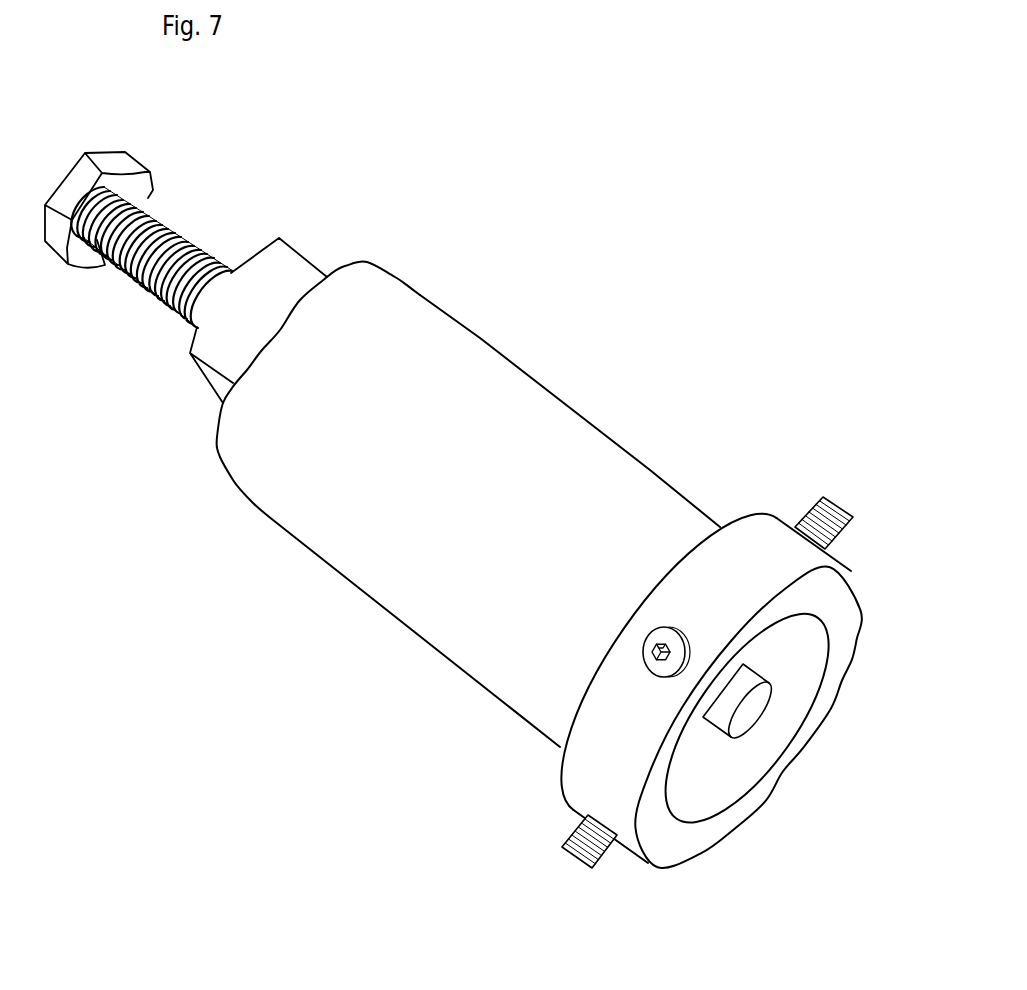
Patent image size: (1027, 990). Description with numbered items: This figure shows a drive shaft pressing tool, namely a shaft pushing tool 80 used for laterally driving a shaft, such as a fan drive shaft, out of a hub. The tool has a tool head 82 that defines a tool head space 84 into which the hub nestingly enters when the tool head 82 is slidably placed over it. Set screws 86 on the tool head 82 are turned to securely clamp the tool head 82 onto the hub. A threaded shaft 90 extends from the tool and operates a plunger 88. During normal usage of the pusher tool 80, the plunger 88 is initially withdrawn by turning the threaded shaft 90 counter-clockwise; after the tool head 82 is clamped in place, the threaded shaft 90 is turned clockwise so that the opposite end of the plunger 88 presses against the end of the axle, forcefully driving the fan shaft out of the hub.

The shaft pushing tool 80 is at (503, 310).
The tool head 82 is at (687, 843).
The tool head space 84 is at (707, 763).
The set screws 86 is at (656, 652).
The plunger 88 is at (745, 712).
The threaded shaft 90 is at (152, 278).